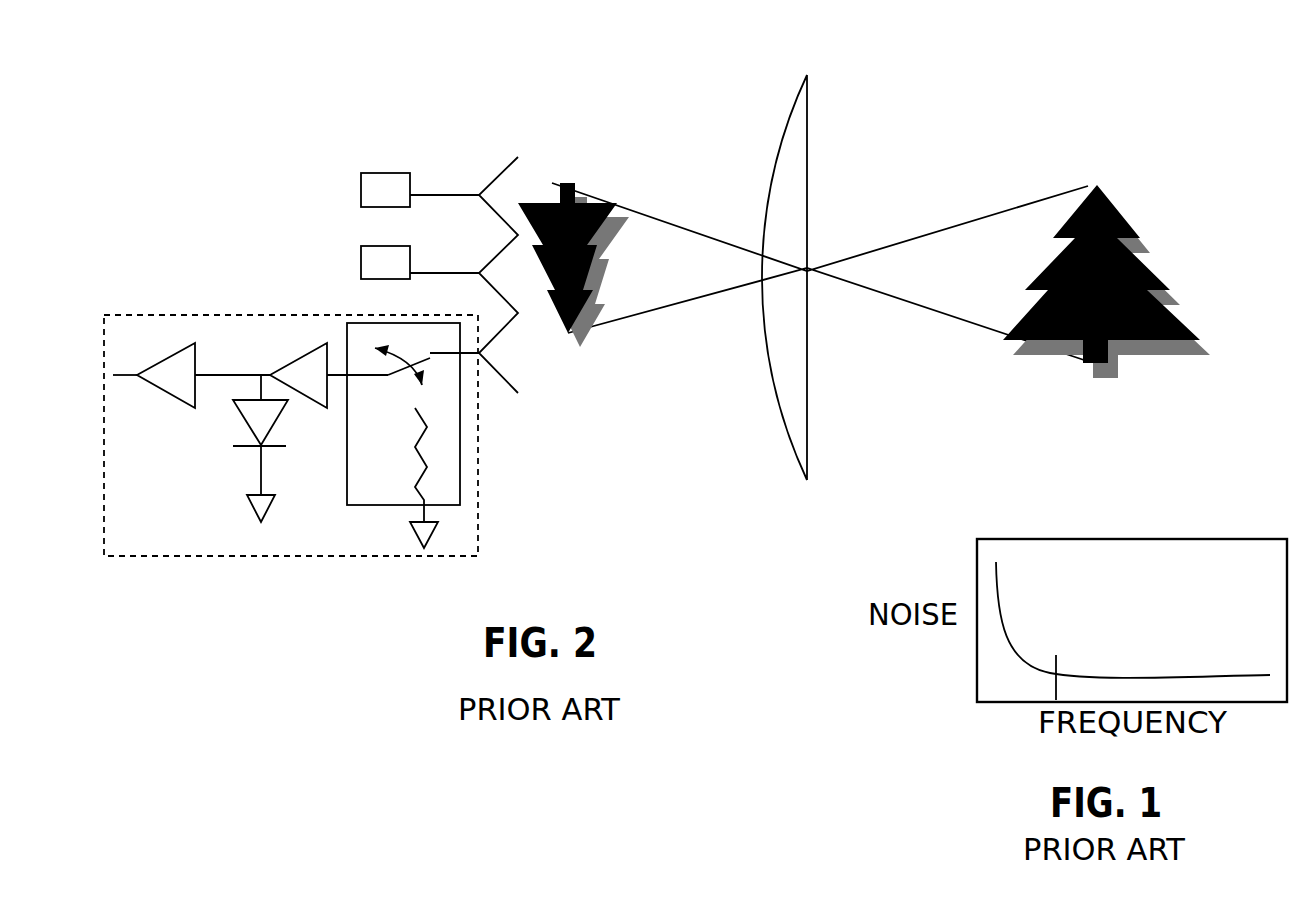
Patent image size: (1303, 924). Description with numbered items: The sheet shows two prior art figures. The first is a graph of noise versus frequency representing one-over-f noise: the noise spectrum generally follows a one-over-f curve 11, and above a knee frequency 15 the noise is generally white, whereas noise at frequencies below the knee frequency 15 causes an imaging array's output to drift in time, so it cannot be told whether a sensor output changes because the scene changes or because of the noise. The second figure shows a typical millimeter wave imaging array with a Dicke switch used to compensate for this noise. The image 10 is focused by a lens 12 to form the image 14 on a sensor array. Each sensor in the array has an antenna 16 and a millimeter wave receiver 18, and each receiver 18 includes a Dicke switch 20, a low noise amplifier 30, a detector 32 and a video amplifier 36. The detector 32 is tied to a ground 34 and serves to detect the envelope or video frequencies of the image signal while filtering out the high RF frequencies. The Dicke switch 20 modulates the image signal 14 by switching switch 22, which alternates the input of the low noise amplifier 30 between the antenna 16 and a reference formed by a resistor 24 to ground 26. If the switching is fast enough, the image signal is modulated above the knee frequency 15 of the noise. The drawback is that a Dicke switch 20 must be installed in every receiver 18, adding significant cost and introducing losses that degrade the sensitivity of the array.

In FIG. 2, the image 10 is at (1115, 208).
In FIG. 1, the 1/f curve 11 is at (1003, 615).
In FIG. 2, the lens 12 is at (795, 165).
In FIG. 2, the image 14 is at (618, 205).
In FIG. 1, the knee frequency 15 is at (1057, 663).
In FIG. 2, the antenna 16 is at (493, 178).
In FIG. 2, the millimeter wave receiver 18 is at (382, 187).
In FIG. 2, the Dicke switch 20 is at (460, 450).
In FIG. 2, the switch 22 is at (420, 358).
In FIG. 2, the resistor 24 is at (412, 455).
In FIG. 2, the ground 26 is at (417, 533).
In FIG. 2, the low noise amplifier 30 is at (307, 367).
In FIG. 2, the detector 32 is at (248, 413).
In FIG. 2, the ground 34 is at (258, 507).
In FIG. 2, the video amplifier 36 is at (173, 367).